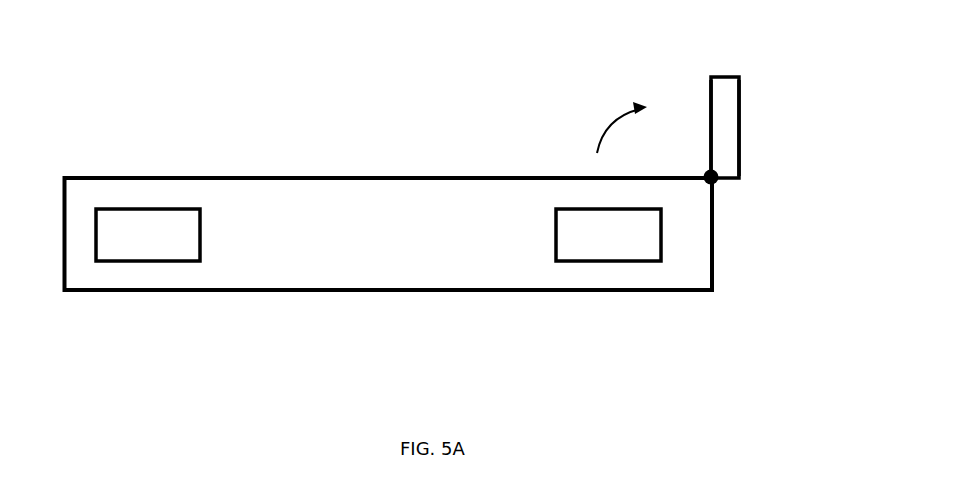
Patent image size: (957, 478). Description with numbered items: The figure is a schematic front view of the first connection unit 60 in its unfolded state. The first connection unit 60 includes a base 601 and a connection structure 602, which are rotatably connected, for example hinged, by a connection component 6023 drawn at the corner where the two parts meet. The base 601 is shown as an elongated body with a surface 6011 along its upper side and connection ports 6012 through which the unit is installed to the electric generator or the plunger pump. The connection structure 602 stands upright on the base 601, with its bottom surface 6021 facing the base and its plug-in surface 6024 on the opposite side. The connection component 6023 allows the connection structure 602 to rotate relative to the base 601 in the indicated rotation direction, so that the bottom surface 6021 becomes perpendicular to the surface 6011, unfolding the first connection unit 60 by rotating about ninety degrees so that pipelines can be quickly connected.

The first connection unit 60 is at (58, 39).
The base 601 is at (692, 240).
The surface of the base 6011 is at (302, 177).
The connection port 6012 is at (627, 237).
The connection structure 602 is at (727, 109).
The bottom surface 6021 is at (713, 120).
The plug-in surface 6024 is at (743, 153).
The connection component 6023 is at (717, 183).